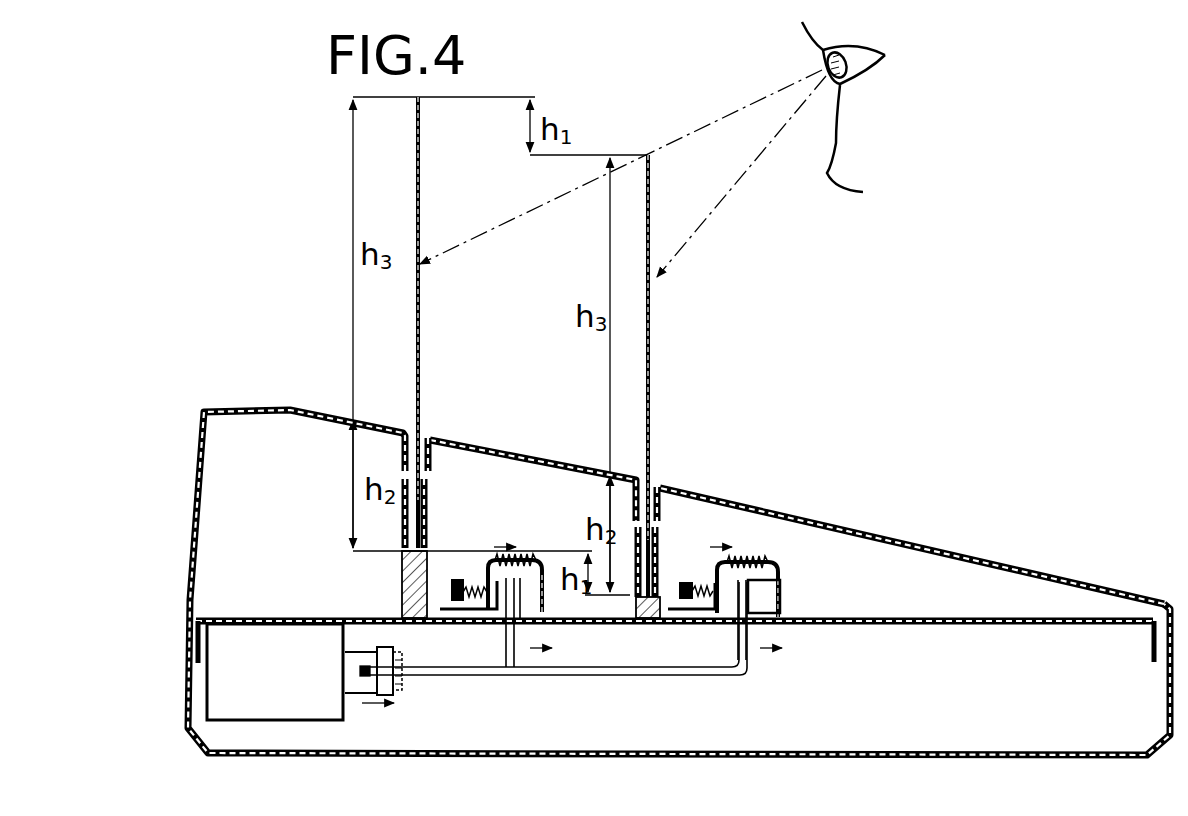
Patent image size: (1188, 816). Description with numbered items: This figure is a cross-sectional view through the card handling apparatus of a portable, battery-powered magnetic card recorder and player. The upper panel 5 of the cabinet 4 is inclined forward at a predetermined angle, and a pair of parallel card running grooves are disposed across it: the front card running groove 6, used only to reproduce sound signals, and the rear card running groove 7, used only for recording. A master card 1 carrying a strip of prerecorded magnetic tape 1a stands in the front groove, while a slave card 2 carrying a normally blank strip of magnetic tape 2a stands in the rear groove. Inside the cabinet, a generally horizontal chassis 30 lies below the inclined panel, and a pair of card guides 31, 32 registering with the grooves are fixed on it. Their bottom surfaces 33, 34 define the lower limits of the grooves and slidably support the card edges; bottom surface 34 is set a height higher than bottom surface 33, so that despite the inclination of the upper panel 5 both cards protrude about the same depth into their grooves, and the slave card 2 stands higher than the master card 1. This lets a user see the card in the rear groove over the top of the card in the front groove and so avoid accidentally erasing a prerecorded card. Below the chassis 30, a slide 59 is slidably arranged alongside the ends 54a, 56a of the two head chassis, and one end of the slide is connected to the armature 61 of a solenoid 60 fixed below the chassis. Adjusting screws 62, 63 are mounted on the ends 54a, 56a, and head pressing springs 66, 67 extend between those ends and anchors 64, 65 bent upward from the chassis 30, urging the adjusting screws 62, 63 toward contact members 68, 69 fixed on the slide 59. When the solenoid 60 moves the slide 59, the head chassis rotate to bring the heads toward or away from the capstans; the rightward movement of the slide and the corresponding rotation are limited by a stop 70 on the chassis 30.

The master card 1 is at (650, 335).
The magnetic tape 1a is at (656, 548).
The slave card 2 is at (420, 311).
The magnetic tape 2a is at (430, 520).
The cabinet 4 is at (1102, 588).
The upper panel 5 is at (893, 540).
The front card running groove 6 is at (655, 487).
The rear card running groove 7 is at (428, 442).
The chassis 30 is at (921, 625).
The card guide 31 is at (633, 563).
The card guide 32 is at (410, 540).
The bottom surface 33 is at (640, 605).
The bottom surface 34 is at (405, 555).
The side of head chassis 54a is at (716, 580).
The side of head chassis 56a is at (540, 558).
The slide 59 is at (637, 676).
The solenoid 60 is at (283, 632).
The armature 61 is at (347, 693).
The adjusting screw 62 is at (690, 576).
The adjusting screw 63 is at (452, 580).
The anchor 64 is at (784, 578).
The anchor 65 is at (548, 568).
The head pressing spring 66 is at (752, 558).
The head pressing spring 67 is at (518, 562).
The contact member 68 is at (736, 640).
The contact member 69 is at (505, 640).
The stop 70 is at (766, 600).